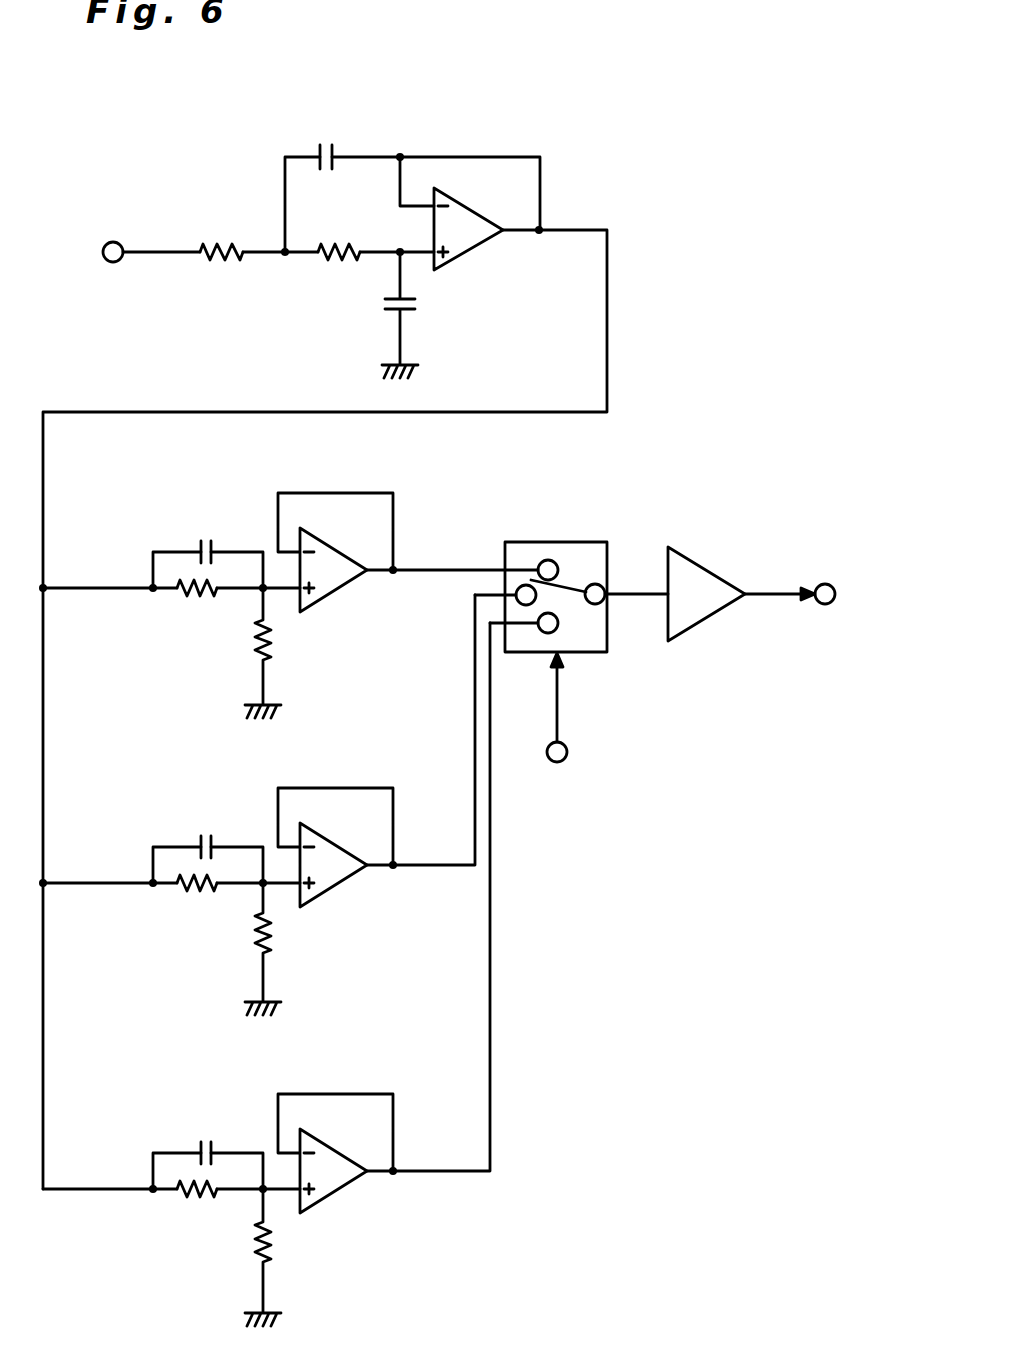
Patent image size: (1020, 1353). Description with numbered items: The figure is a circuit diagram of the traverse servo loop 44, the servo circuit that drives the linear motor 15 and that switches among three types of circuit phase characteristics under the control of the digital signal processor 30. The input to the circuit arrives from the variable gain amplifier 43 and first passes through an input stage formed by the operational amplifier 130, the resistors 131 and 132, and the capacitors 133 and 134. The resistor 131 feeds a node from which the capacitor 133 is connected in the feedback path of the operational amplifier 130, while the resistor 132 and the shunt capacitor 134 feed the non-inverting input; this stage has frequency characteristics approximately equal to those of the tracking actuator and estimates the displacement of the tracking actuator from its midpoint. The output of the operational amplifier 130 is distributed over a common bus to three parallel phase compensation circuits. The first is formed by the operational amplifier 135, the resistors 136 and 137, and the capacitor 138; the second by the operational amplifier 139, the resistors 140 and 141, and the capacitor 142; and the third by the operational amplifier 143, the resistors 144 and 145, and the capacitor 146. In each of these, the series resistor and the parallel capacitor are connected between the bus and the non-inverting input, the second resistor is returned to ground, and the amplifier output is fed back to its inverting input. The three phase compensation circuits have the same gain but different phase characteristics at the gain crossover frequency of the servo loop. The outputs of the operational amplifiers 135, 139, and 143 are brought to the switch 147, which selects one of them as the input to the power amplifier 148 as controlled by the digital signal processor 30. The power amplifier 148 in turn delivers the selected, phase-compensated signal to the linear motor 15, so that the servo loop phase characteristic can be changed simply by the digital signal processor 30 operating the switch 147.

The variable gain amplifier 43 is at (90, 253).
The traverse servo loop 44 is at (384, 628).
The resistor 131 is at (232, 245).
The resistor 132 is at (339, 258).
The capacitor 133 is at (326, 150).
The capacitor 134 is at (413, 308).
The operational amplifier 130 is at (477, 247).
The operational amplifier 135 is at (337, 597).
The resistor 136 is at (203, 595).
The resistor 137 is at (275, 643).
The capacitor 138 is at (198, 543).
The operational amplifier 139 is at (337, 890).
The resistor 140 is at (195, 890).
The resistor 141 is at (275, 937).
The capacitor 142 is at (200, 840).
The operational amplifier 143 is at (337, 1197).
The resistor 144 is at (195, 1198).
The resistor 145 is at (275, 1247).
The capacitor 146 is at (200, 1145).
The switch 147 is at (558, 542).
The power amplifier 148 is at (697, 558).
The linear motor 15 is at (845, 594).
The digital signal processor 30 is at (567, 733).